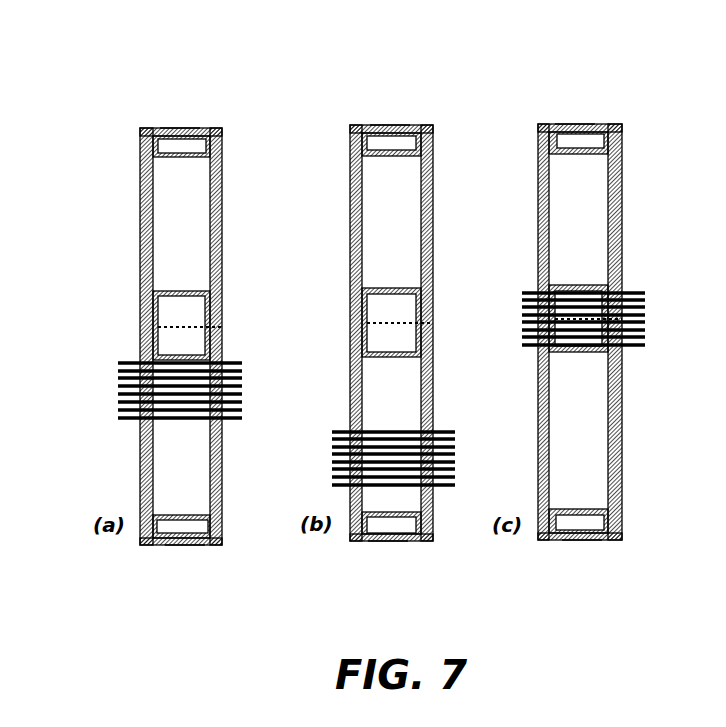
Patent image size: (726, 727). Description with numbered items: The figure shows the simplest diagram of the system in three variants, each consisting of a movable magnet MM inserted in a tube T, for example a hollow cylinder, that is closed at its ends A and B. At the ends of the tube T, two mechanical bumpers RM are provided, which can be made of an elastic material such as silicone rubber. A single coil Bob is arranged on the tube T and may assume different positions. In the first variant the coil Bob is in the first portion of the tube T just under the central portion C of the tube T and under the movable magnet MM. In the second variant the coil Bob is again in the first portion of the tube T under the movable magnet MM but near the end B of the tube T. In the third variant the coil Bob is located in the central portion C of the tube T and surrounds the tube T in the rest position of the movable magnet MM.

The tube T is at (163, 248).
The mechanical bumpers RM is at (188, 145).
The movable magnet MM is at (175, 315).
The central portion C is at (211, 327).
The coil Bob is at (175, 403).
The end A is at (176, 128).
The end B is at (188, 548).